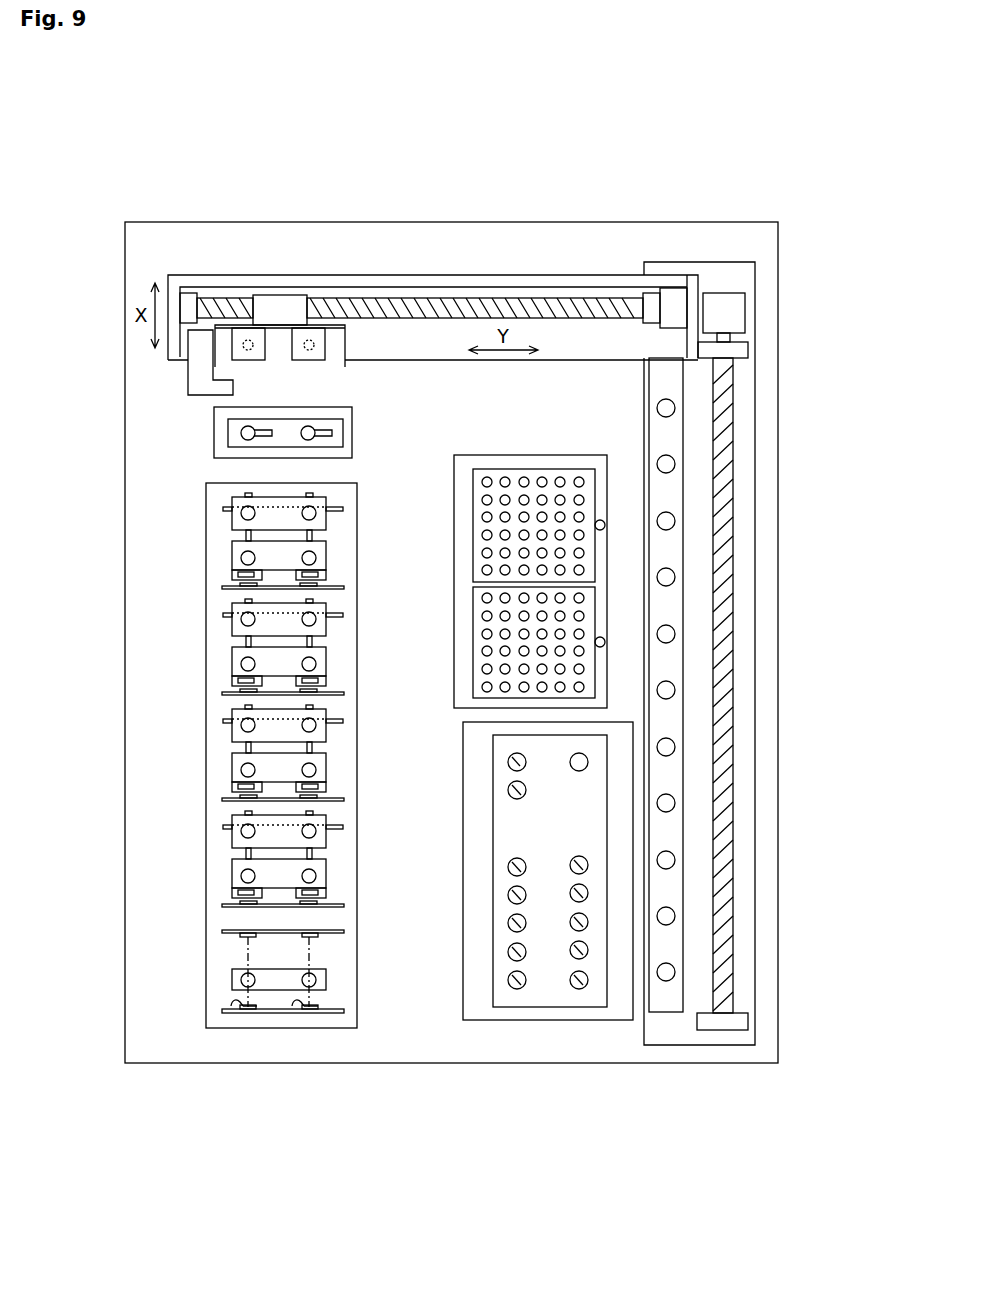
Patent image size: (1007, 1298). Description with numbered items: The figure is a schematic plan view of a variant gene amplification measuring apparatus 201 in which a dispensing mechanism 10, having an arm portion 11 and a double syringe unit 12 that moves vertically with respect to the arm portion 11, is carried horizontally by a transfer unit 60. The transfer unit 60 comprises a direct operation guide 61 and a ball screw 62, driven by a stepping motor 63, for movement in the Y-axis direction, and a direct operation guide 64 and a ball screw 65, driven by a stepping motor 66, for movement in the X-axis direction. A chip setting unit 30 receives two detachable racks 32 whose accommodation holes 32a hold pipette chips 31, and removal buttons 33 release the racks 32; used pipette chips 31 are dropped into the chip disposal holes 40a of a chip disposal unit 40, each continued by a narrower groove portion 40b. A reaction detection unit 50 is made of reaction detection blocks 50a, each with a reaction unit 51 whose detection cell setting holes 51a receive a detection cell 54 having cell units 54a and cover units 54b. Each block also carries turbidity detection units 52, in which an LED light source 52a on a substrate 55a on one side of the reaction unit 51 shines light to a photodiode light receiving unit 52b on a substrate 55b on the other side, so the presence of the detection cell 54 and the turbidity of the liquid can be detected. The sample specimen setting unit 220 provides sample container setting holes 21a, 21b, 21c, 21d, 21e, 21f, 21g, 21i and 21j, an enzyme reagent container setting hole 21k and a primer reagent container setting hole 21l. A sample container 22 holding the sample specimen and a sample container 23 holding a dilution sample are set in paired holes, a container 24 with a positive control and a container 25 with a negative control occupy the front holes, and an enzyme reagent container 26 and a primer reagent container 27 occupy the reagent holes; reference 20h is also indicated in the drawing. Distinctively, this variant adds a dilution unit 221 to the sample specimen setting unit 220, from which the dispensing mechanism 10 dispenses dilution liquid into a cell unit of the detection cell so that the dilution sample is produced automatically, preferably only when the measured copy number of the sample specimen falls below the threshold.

The dispensing mechanism 10 is at (287, 312).
The arm portion 11 is at (348, 342).
The syringe unit 12 is at (241, 335).
The gene amplification measuring apparatus 201 is at (497, 220).
The transfer unit 60 is at (505, 591).
The direct operation guide 61 is at (567, 288).
The ball screw 62 is at (530, 306).
The stepping motor 63 is at (677, 300).
The direct operation guide 64 is at (668, 383).
The ball screw 65 is at (725, 404).
The stepping motor 66 is at (728, 316).
The chip setting unit 30 is at (658, 563).
The pipette chip 31 is at (580, 480).
The rack 32 is at (656, 566).
The accommodation hole 32a is at (584, 482).
The removal button 33 is at (606, 527).
The chip disposal unit 40 is at (288, 418).
The chip disposal hole 40a is at (308, 430).
The groove portion 40b is at (258, 430).
The reaction detection unit 50 is at (186, 487).
The reaction detection block 50a is at (223, 535).
The detection cell 54 is at (239, 711).
The cell unit 54a is at (314, 563).
The cover unit 54b is at (314, 517).
The substrate 55a is at (222, 1011).
The substrate 55b is at (222, 931).
The reaction unit 51 is at (219, 1029).
The detection cell setting hole 51a is at (250, 987).
The turbidity detection unit 52 is at (304, 1051).
The LED light source 52a is at (234, 1006).
The photodiode light receiving unit 52b is at (258, 939).
The sample specimen setting unit 220 is at (637, 926).
The dilution unit 221 is at (582, 762).
The sample container setting hole 21a is at (514, 874).
The sample container setting hole 21b is at (584, 877).
The sample container setting hole 21c is at (514, 903).
The sample container setting hole 21d is at (586, 903).
The sample container setting hole 21e is at (514, 932).
The sample container setting hole 21f is at (586, 932).
The sample container setting hole 21g is at (514, 960).
The sample container setting hole 21i is at (514, 988).
The sample container setting hole 21j is at (581, 990).
The enzyme reagent container setting hole 21k is at (516, 794).
The primer reagent container setting hole 21l is at (516, 760).
The sample container 22 is at (515, 896).
The sample container 23 is at (588, 894).
The container 24 is at (513, 867).
The container 25 is at (590, 857).
The enzyme reagent container 26 is at (515, 791).
The primer reagent container 27 is at (512, 764).
The hole 20h is at (586, 962).